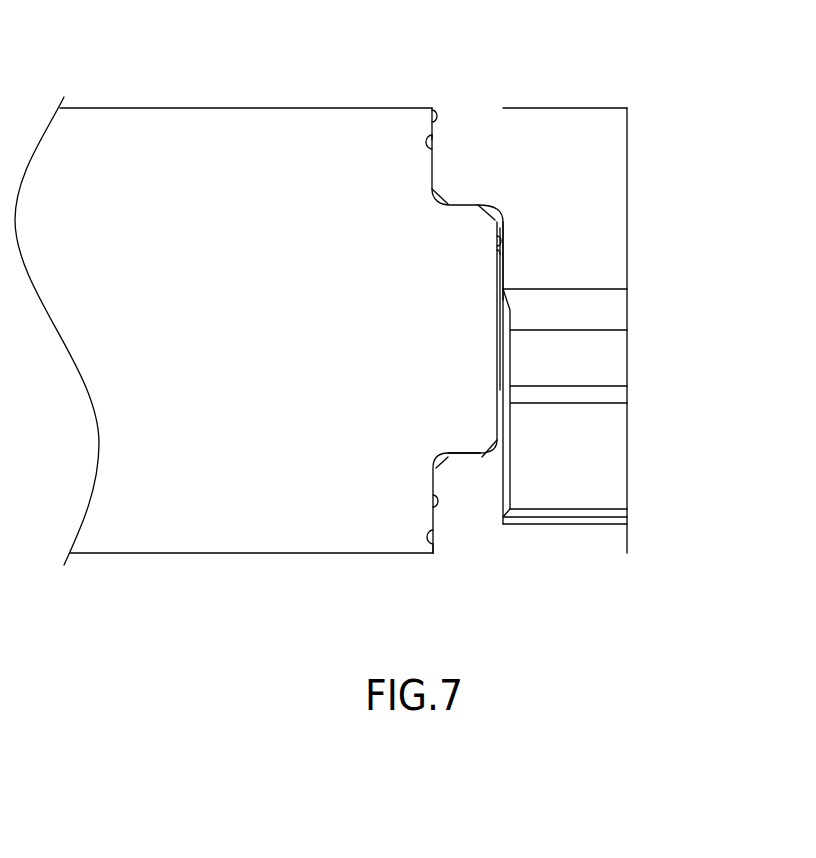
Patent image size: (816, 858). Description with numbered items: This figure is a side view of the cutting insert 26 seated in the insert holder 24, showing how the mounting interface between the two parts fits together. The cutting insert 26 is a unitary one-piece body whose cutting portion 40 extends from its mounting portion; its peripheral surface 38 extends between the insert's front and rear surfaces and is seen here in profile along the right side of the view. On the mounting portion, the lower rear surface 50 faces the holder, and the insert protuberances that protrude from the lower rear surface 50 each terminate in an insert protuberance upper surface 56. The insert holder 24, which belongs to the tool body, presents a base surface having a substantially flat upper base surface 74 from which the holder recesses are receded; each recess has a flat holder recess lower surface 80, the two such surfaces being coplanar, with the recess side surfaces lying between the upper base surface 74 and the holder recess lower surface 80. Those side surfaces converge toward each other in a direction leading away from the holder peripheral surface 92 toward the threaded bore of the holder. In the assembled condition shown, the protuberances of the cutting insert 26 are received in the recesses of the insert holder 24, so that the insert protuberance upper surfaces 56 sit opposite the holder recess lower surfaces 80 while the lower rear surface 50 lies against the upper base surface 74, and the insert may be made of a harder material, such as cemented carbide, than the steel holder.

The insert holder 24 is at (417, 361).
The cutting insert 26 is at (651, 469).
The peripheral surface 38 is at (605, 148).
The cutting portion 40 is at (656, 352).
The lower rear surface 50 is at (503, 252).
The insert protuberance upper surface 56 is at (433, 136).
The upper base surface 74 is at (497, 248).
The holder recess lower surface 80 is at (432, 109).
The holder peripheral surface 92 is at (465, 415).